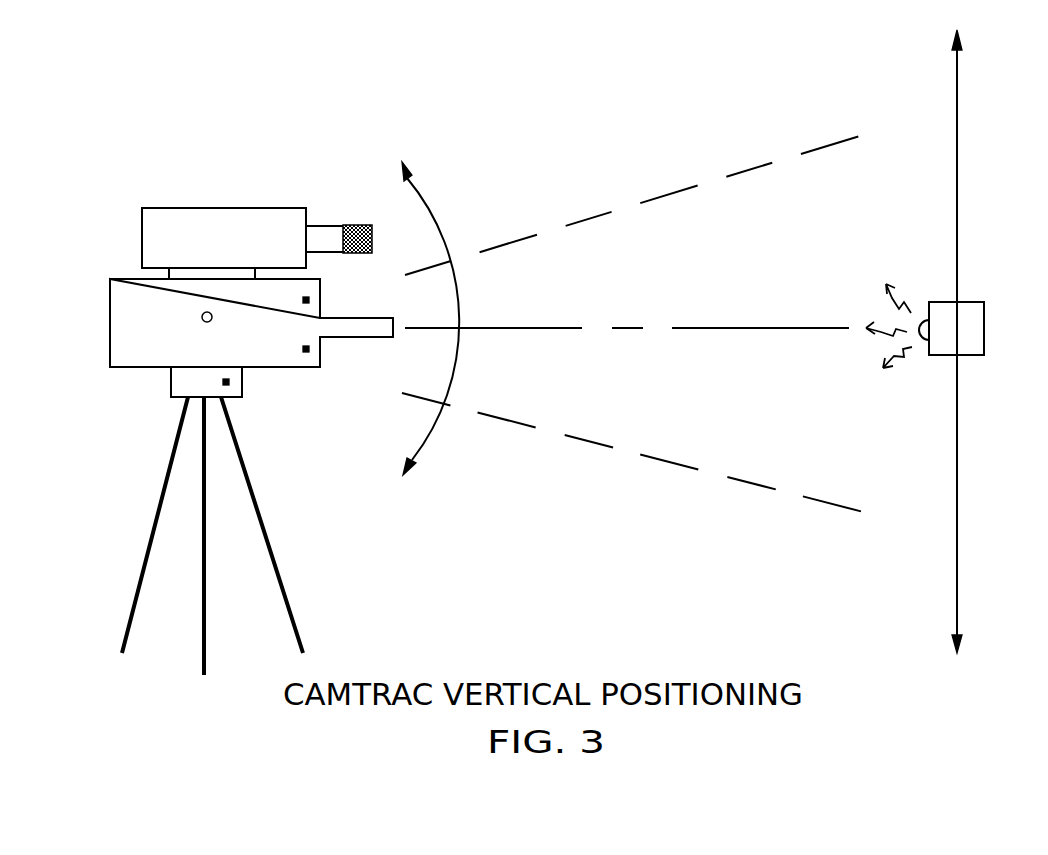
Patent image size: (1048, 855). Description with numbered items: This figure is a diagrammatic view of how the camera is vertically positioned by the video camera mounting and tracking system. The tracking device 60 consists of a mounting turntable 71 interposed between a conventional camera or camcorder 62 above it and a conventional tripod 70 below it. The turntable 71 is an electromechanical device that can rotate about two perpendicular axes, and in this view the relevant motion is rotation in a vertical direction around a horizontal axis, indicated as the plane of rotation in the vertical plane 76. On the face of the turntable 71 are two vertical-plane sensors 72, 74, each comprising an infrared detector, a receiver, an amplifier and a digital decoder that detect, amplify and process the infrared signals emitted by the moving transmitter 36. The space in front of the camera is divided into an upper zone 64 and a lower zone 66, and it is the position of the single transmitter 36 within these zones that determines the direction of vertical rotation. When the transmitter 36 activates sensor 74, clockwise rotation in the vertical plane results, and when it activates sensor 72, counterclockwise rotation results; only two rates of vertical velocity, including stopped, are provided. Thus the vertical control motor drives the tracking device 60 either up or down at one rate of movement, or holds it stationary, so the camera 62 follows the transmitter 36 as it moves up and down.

The moving transmitter 36 is at (984, 329).
The tracking device 60 is at (110, 323).
The camera 62 is at (142, 237).
The upper zone 64 is at (639, 205).
The lower zone 66 is at (638, 439).
The tripod 70 is at (250, 472).
The mounting turntable 71 is at (229, 382).
The sensor 72 is at (309, 300).
The sensor 74 is at (309, 350).
The plane of rotation in the vertical plane 76 is at (202, 317).